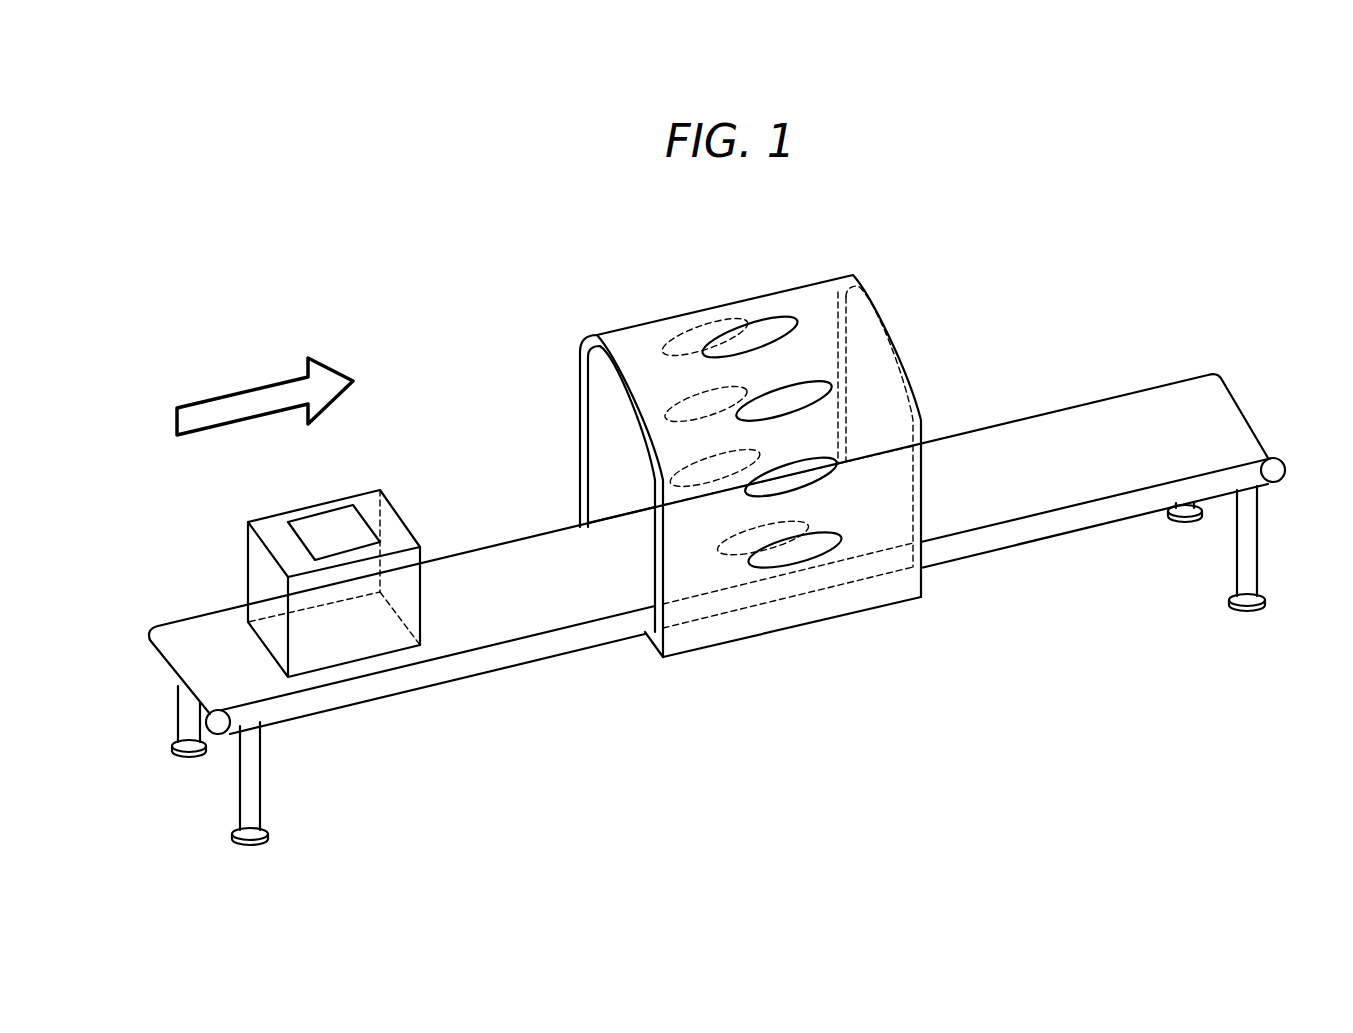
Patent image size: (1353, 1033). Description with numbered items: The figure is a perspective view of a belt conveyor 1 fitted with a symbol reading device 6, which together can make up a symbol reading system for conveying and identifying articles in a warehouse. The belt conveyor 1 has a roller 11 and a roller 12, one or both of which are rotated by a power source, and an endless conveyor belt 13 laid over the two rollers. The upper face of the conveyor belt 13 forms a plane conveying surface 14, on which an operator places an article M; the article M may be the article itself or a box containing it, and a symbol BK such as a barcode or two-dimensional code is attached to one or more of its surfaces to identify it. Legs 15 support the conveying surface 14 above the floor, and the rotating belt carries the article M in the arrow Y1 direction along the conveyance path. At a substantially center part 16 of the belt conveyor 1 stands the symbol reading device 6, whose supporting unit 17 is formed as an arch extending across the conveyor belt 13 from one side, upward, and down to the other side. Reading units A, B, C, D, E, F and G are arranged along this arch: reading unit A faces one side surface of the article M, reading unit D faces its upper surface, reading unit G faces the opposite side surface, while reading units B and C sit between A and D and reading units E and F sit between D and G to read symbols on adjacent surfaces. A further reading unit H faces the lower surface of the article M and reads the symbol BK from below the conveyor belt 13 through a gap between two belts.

The belt conveyor 1 is at (1147, 385).
The symbol reading device 6 is at (600, 442).
The roller 11 is at (1279, 472).
The roller 12 is at (218, 724).
The conveyor belt 13 is at (1072, 420).
The conveying surface 14 is at (468, 563).
The legs 15 is at (254, 787).
The center part 16 is at (632, 570).
The supporting unit 17 is at (898, 590).
The article M is at (287, 510).
The symbol BK is at (335, 523).
The arrow direction Y1 is at (177, 422).
The reading unit A is at (690, 467).
The reading unit B is at (680, 408).
The reading unit C is at (682, 343).
The reading unit D is at (764, 328).
The reading unit E is at (817, 393).
The reading unit F is at (827, 477).
The reading unit G is at (808, 547).
The reading unit H is at (727, 553).